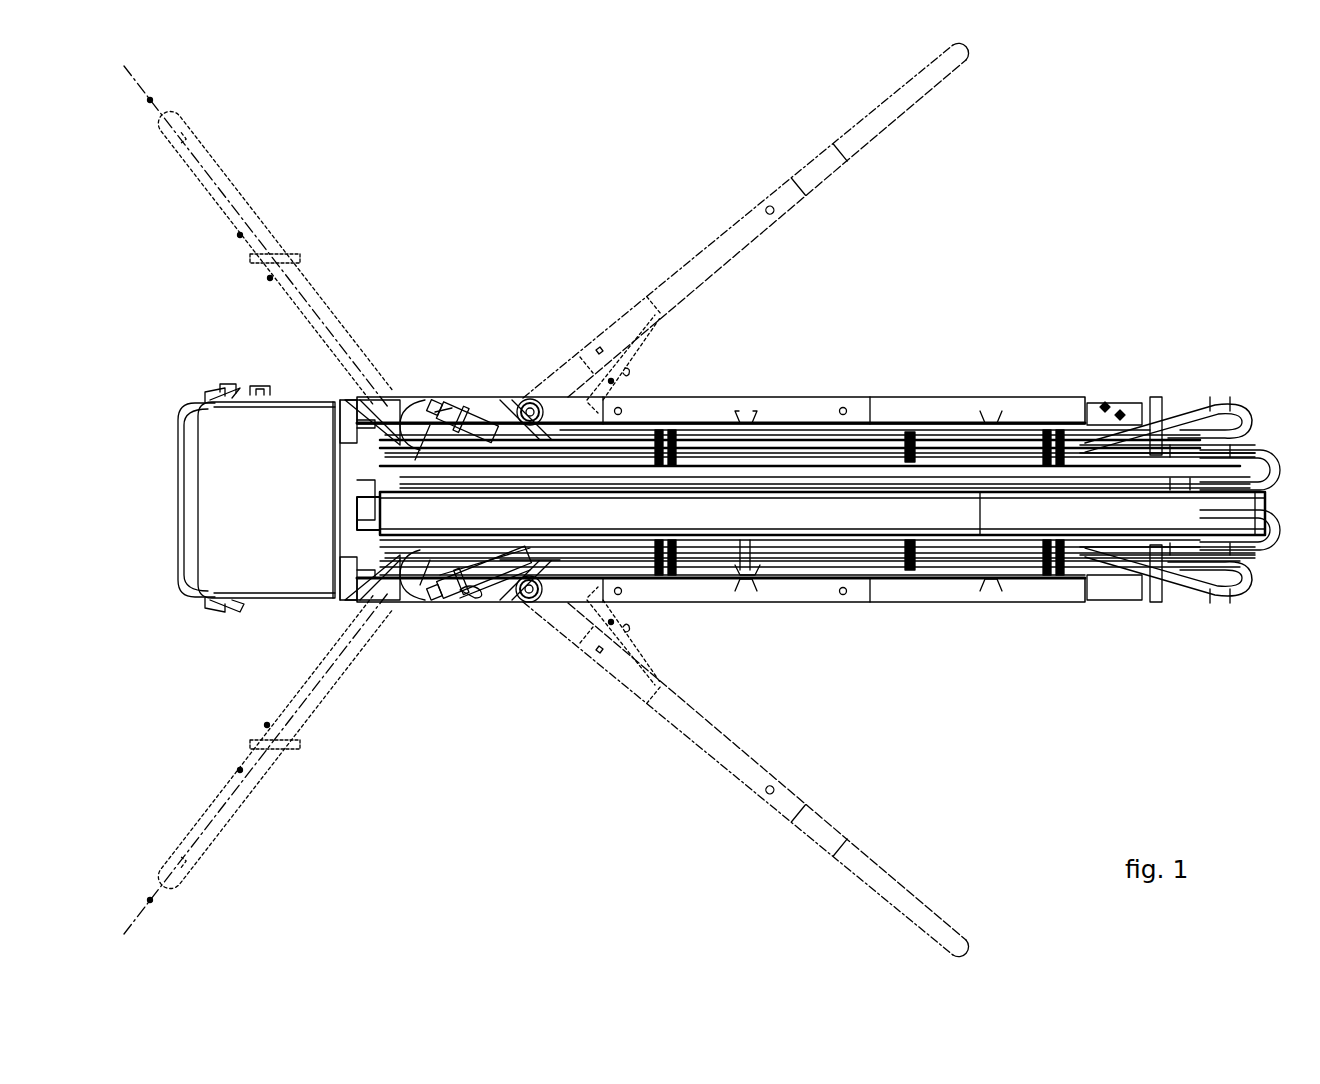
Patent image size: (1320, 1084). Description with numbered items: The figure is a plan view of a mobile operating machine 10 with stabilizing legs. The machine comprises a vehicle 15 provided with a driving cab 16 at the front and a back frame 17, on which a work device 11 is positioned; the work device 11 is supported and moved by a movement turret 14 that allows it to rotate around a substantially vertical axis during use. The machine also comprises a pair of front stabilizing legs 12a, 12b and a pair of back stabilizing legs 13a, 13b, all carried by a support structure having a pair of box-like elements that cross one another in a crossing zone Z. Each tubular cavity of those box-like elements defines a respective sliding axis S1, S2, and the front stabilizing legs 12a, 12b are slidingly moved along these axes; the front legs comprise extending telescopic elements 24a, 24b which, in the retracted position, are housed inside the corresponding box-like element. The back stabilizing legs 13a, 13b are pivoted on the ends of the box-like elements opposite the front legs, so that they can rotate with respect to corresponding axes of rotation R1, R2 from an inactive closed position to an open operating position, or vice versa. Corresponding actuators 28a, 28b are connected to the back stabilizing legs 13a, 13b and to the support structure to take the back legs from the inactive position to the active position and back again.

The mobile operating machine 10 is at (1140, 241).
The work device 11 is at (866, 530).
The front stabilizing leg 12a is at (286, 216).
The front stabilizing leg 12b is at (285, 785).
The back stabilizing leg 13a is at (839, 108).
The back stabilizing leg 13b is at (840, 893).
The movement turret 14 is at (488, 418).
The vehicle 15 is at (254, 622).
The driving cab 16 is at (227, 488).
The back frame 17 is at (820, 389).
The extending telescopic element 24a is at (268, 278).
The extending telescopic element 24b is at (265, 725).
The actuator 28a is at (614, 381).
The actuator 28b is at (614, 622).
The axis of rotation R1 is at (530, 401).
The axis of rotation R2 is at (528, 600).
The sliding axis S1 is at (152, 96).
The sliding axis S2 is at (152, 906).
The crossing zone Z is at (441, 594).